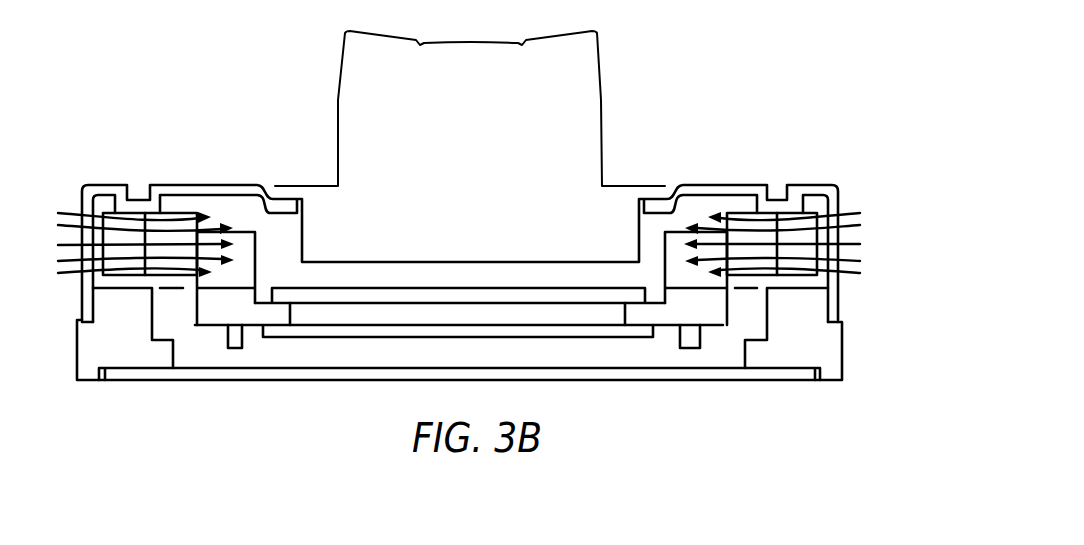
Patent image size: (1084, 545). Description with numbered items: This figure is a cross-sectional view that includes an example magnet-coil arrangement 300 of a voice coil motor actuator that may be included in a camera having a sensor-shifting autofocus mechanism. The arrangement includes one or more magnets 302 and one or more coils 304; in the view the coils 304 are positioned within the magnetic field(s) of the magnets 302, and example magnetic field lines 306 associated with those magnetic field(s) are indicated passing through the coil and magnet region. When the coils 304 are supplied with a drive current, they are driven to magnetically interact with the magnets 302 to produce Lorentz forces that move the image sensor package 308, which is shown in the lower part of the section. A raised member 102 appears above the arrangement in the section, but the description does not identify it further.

The button/cap member 102 is at (467, 41).
The magnet-coil arrangement 300 is at (713, 54).
The magnet 302 is at (803, 213).
The coil 304 is at (716, 237).
The magnetic field lines 306 is at (861, 237).
The image sensor package 308 is at (331, 348).